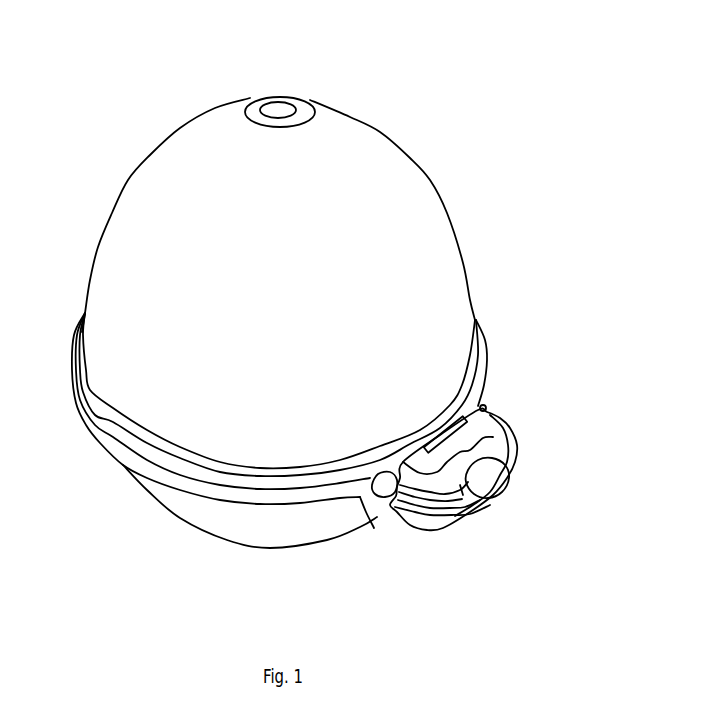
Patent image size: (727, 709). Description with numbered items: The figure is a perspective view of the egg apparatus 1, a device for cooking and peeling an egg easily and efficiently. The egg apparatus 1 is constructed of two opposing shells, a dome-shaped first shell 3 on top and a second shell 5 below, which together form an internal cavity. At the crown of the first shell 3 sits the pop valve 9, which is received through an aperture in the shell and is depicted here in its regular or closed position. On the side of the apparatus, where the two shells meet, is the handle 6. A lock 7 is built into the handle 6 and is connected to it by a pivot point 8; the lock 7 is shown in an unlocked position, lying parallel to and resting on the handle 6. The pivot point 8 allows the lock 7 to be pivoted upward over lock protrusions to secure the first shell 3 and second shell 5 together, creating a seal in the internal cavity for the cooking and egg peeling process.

The egg apparatus 1 is at (332, 339).
The first shell 3 is at (120, 197).
The second shell 5 is at (160, 500).
The handle 6 is at (405, 522).
The lock 7 is at (394, 507).
The pivot point 8 is at (394, 486).
The pop valve 9 is at (283, 107).